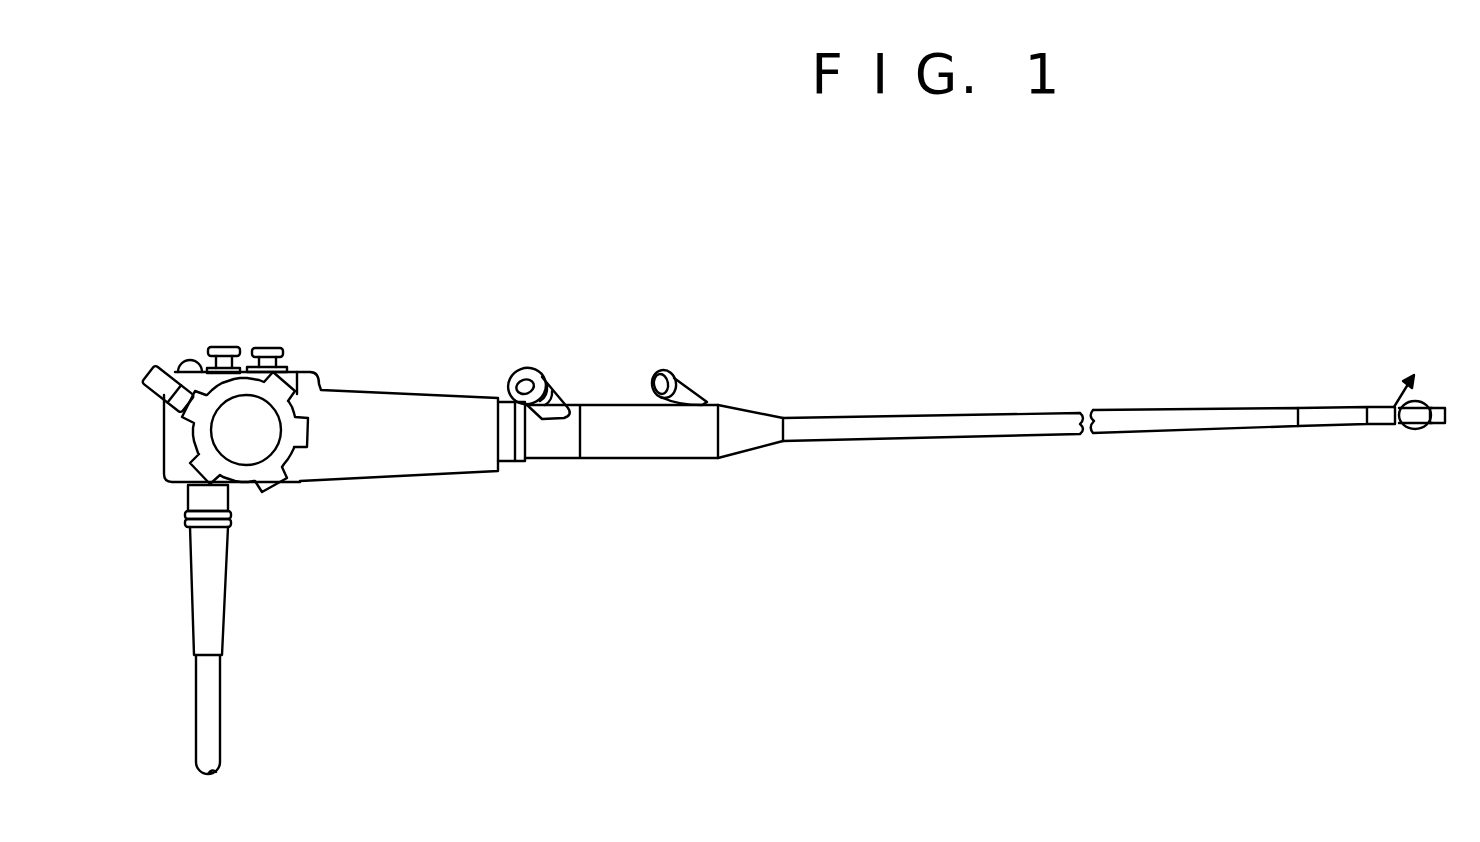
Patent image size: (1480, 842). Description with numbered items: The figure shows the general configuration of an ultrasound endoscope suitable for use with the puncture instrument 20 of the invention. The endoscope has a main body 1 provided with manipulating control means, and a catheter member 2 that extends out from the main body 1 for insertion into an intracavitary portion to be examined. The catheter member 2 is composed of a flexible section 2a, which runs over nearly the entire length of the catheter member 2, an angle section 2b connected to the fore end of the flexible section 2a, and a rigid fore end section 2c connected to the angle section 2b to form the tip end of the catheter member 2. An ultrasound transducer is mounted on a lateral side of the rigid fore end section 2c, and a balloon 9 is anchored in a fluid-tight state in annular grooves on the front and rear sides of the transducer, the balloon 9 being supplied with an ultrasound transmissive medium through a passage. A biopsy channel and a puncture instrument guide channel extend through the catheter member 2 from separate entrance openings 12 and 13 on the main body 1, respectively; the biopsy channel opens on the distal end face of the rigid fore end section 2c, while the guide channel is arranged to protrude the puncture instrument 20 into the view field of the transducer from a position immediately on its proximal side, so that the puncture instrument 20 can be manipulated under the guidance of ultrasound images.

The main body 1 is at (426, 471).
The catheter member 2 is at (1121, 413).
The flexible section 2a is at (997, 434).
The angle section 2b is at (1311, 426).
The rigid fore end section 2c is at (1440, 424).
The balloon 9 is at (1405, 432).
The entrance opening 12 is at (547, 371).
The entrance opening 13 is at (692, 398).
The puncture instrument 20 is at (1393, 392).